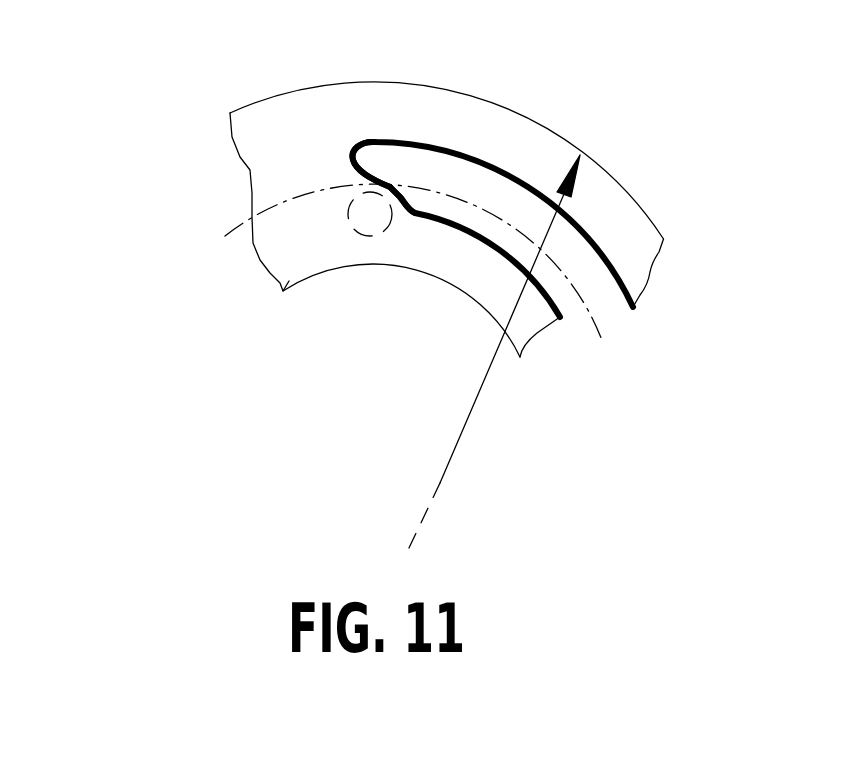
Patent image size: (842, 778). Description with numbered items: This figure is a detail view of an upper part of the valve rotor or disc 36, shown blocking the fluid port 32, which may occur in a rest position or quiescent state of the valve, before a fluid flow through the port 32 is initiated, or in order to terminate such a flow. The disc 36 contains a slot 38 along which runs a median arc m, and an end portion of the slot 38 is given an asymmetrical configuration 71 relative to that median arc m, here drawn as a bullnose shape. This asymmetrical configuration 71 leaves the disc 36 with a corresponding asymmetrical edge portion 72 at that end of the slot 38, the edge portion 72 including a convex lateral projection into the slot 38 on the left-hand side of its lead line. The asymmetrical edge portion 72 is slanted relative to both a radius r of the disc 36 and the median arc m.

The disc 36 is at (330, 168).
The slot 38 is at (598, 258).
The fluid port 32 is at (353, 227).
The asymmetrical configuration 71 is at (407, 123).
The asymmetrical edge portion 72 is at (407, 212).
The median arc m is at (605, 342).
The radius r is at (473, 407).